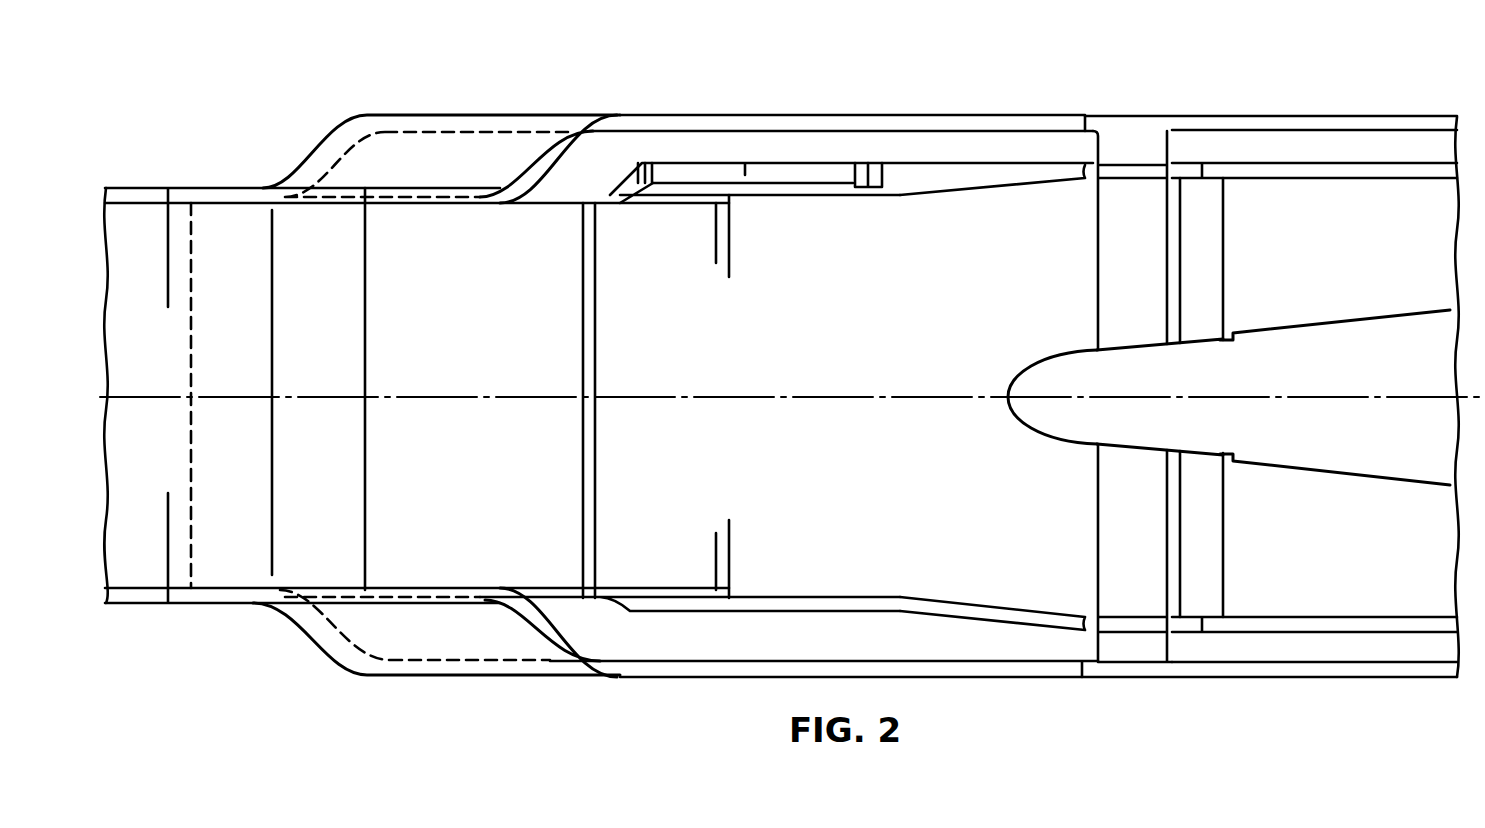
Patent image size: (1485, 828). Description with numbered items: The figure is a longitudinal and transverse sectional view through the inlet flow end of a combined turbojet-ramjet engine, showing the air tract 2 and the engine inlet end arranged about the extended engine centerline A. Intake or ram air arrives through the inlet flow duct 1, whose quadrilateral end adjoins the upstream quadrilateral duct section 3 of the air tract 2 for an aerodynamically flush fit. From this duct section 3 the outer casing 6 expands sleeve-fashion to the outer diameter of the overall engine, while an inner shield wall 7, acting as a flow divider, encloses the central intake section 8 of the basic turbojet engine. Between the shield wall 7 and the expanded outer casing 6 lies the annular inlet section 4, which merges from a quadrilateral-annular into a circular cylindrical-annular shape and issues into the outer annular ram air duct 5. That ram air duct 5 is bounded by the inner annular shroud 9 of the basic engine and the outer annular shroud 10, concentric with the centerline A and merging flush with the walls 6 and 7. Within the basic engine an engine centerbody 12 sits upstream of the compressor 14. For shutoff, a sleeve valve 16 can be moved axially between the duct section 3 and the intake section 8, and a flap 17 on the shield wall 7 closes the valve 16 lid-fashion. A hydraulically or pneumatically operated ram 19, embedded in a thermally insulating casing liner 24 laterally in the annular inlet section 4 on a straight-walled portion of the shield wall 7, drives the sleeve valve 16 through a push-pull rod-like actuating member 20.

The inlet flow duct 1 is at (121, 508).
The air tract 2 is at (803, 102).
The upstream quadrilateral duct section 3 is at (308, 493).
The annular inlet section 4 is at (976, 163).
The outer annular ram air duct 5 is at (1321, 163).
The outer casing 6 is at (618, 113).
The inner shield wall 7 is at (1020, 175).
The central intake section 8 is at (851, 527).
The inner annular shroud 9 is at (1393, 170).
The outer annular shroud 10 is at (1222, 127).
The engine centerbody 12 is at (1035, 412).
The compressor 14 is at (1324, 597).
The sleeve valve 16 is at (322, 200).
The flap 17 is at (192, 512).
The ram 19 is at (856, 142).
The push-pull rod-like actuating member 20 is at (795, 178).
The thermally insulating casing liner 24 is at (762, 150).
The engine centerline A is at (1315, 397).